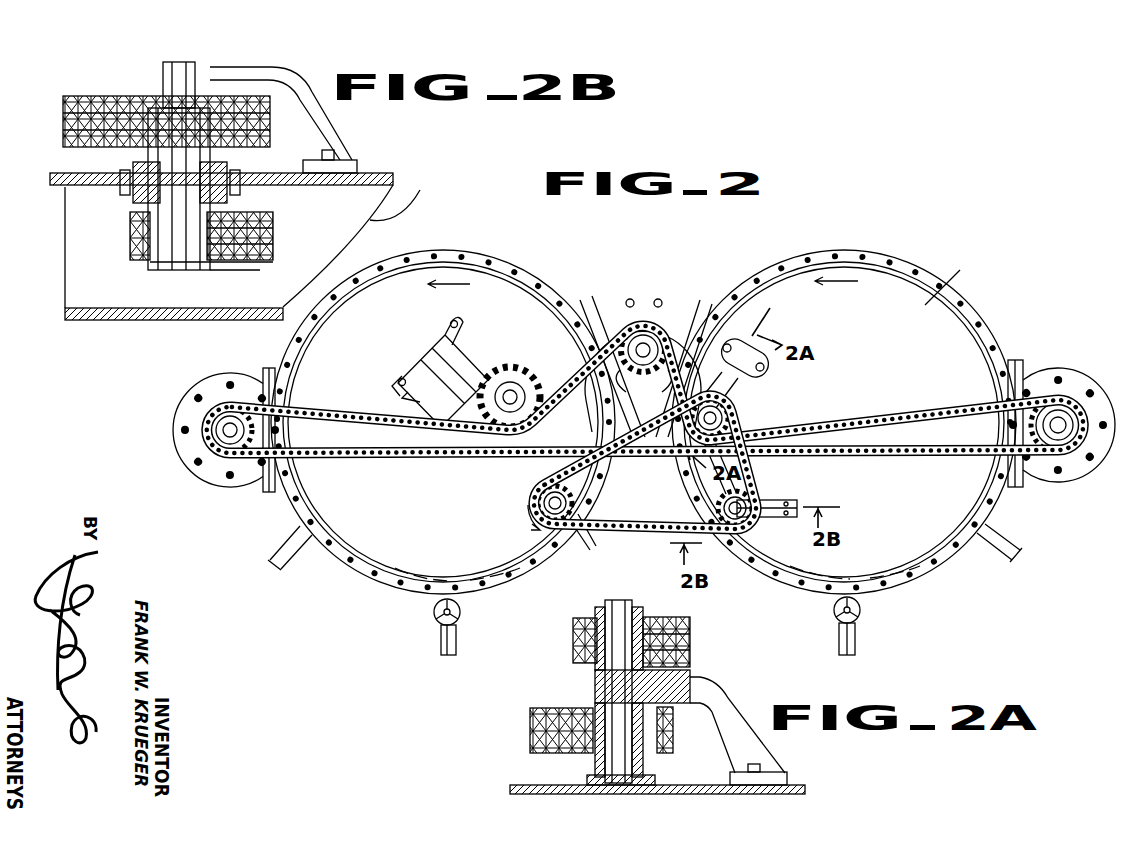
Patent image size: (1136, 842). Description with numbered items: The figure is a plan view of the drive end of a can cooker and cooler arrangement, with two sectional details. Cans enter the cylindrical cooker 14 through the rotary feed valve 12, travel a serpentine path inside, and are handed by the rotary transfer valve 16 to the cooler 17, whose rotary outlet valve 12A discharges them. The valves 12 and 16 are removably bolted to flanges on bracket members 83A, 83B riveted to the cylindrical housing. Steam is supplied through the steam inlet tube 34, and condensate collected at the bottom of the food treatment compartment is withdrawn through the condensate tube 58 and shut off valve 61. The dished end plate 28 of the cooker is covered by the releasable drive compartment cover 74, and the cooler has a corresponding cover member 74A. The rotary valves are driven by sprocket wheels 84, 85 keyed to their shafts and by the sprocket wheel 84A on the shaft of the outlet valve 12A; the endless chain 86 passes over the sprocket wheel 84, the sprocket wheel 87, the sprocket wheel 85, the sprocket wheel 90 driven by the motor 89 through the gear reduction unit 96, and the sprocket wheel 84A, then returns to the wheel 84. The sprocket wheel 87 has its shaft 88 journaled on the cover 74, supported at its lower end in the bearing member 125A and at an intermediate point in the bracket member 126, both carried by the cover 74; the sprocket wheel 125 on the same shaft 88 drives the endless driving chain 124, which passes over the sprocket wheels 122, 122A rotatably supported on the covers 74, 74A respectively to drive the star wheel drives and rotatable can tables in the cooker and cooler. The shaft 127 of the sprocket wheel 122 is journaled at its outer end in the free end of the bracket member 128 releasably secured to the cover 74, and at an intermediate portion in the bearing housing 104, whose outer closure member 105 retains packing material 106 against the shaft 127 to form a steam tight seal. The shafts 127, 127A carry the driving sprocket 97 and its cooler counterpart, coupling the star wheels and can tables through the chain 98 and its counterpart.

In FIG. 2, the rotary feed valve 12 is at (1063, 478).
In FIG. 2B, the rotary feed valve 12 is at (407, 200).
In FIG. 2, the rotary outlet valve of the cooler 12A is at (228, 372).
In FIG. 2, the cooker 14 is at (845, 256).
In FIG. 2, the rotary transfer valve 16 is at (648, 298).
In FIG. 2, the cooler 17 is at (497, 265).
In FIG. 2B, the header or end plate 28 is at (125, 321).
In FIG. 2, the steam inlet tube 34 is at (996, 560).
In FIG. 2, the condensate tube 58 is at (856, 637).
In FIG. 2, the shut off valve 61 is at (861, 611).
In FIG. 2, the drive compartment cover 74 is at (946, 283).
In FIG. 2B, the drive compartment cover 74 is at (380, 178).
In FIG. 2A, the drive compartment cover 74 is at (725, 785).
In FIG. 2, the cover member of the cooler 74A is at (404, 290).
In FIG. 2, the bracket member 83A is at (1030, 345).
In FIG. 2, the bracket member 83B is at (666, 344).
In FIG. 2, the sprocket wheel 84 is at (1063, 412).
In FIG. 2, the sprocket wheel 84A is at (252, 380).
In FIG. 2, the sprocket wheel 85 is at (650, 325).
In FIG. 2, the chain 86 is at (940, 406).
In FIG. 2A, the chain 86 is at (690, 632).
In FIG. 2, the sprocket wheel 87 is at (730, 406).
In FIG. 2A, the sprocket wheel 87 is at (598, 614).
In FIG. 2, the shaft 88 is at (735, 418).
In FIG. 2A, the shaft 88 is at (618, 606).
In FIG. 2, the motor 89 is at (430, 372).
In FIG. 2, the sprocket wheel 90 is at (522, 382).
In FIG. 2, the gear reduction unit 96 is at (476, 356).
In FIG. 2B, the driving sprocket 97 is at (218, 264).
In FIG. 2B, the chain 98 is at (278, 234).
In FIG. 2B, the bearing housing 104 is at (232, 172).
In FIG. 2B, the outer closure member 105 is at (130, 170).
In FIG. 2B, the packing material 106 is at (133, 200).
In FIG. 2, the sprocket wheel 122 is at (750, 495).
In FIG. 2, the sprocket wheel 122A is at (575, 542).
In FIG. 2, the endless driving chain 124 is at (678, 530).
In FIG. 2B, the endless driving chain 124 is at (102, 97).
In FIG. 2A, the sprocket wheel 125 is at (658, 752).
In FIG. 2A, the bearing member 125A is at (632, 786).
In FIG. 2, the bracket member 126 is at (742, 345).
In FIG. 2A, the bracket member 126 is at (712, 694).
In FIG. 2, the shaft 127 is at (747, 518).
In FIG. 2B, the shaft 127 is at (204, 64).
In FIG. 2, the shaft 127A is at (540, 498).
In FIG. 2, the bracket member 128 is at (775, 504).
In FIG. 2B, the bracket member 128 is at (288, 78).